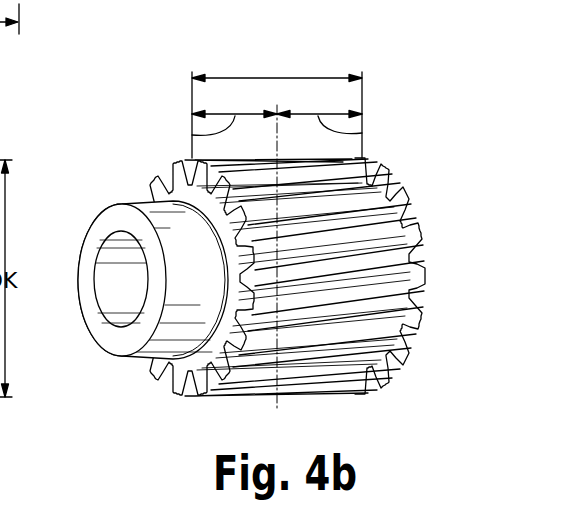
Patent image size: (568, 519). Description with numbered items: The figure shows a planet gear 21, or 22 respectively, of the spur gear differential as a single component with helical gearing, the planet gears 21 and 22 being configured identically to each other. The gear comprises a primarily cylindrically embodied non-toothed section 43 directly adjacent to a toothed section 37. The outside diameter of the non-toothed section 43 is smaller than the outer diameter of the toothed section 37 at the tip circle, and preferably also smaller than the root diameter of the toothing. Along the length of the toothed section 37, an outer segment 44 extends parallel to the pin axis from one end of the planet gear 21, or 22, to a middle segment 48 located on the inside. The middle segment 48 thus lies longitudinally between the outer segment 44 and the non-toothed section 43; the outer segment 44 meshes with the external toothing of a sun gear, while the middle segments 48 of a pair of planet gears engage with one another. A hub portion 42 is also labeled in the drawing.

The planet gear 21 is at (221, 337).
The planet gear 22 is at (146, 446).
The toothed section 37 is at (263, 77).
The hub 42 is at (107, 222).
The non-toothed section 43 is at (163, 342).
The outer segment 44 is at (362, 133).
The middle segment 48 is at (192, 134).